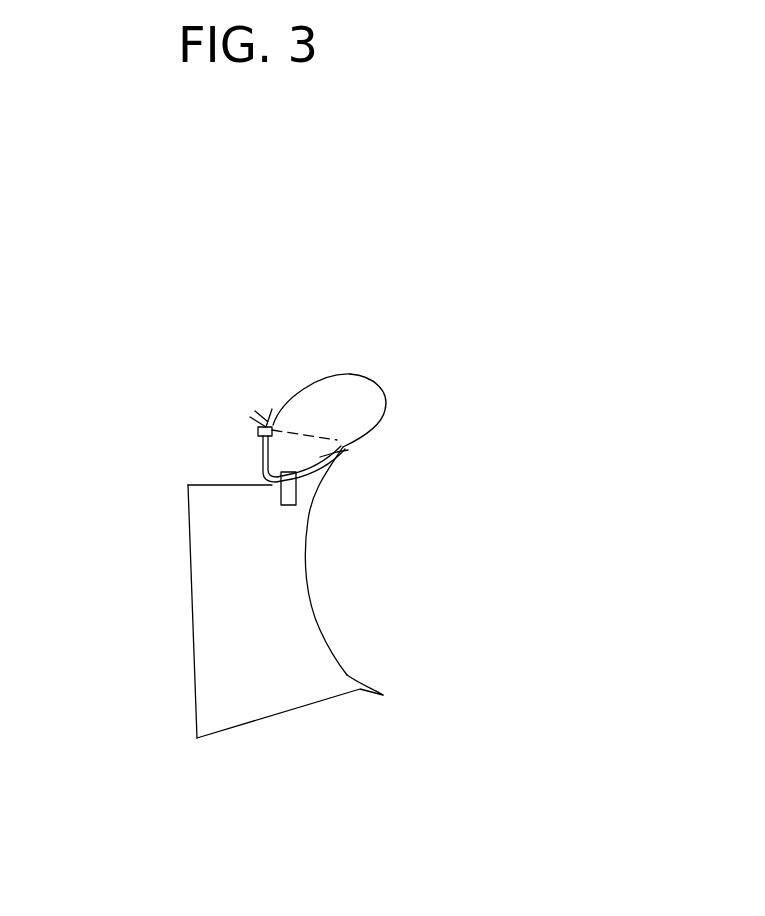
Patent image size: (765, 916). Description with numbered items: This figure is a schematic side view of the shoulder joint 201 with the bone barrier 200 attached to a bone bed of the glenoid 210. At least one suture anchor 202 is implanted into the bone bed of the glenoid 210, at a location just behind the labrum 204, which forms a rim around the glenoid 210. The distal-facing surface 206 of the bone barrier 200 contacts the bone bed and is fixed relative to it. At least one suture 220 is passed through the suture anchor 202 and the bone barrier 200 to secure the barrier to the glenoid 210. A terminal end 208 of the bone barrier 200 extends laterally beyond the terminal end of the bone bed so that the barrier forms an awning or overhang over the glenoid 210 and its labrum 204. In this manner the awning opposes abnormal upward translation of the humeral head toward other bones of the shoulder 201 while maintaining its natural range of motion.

The shoulder joint 201 is at (163, 363).
The bone barrier 200 is at (328, 372).
The terminal end 208 is at (378, 378).
The suture 220 is at (248, 440).
The distal-facing surface 206 is at (262, 467).
The suture anchor 202 is at (270, 500).
The labrum 204 is at (340, 460).
The glenoid 210 is at (308, 568).